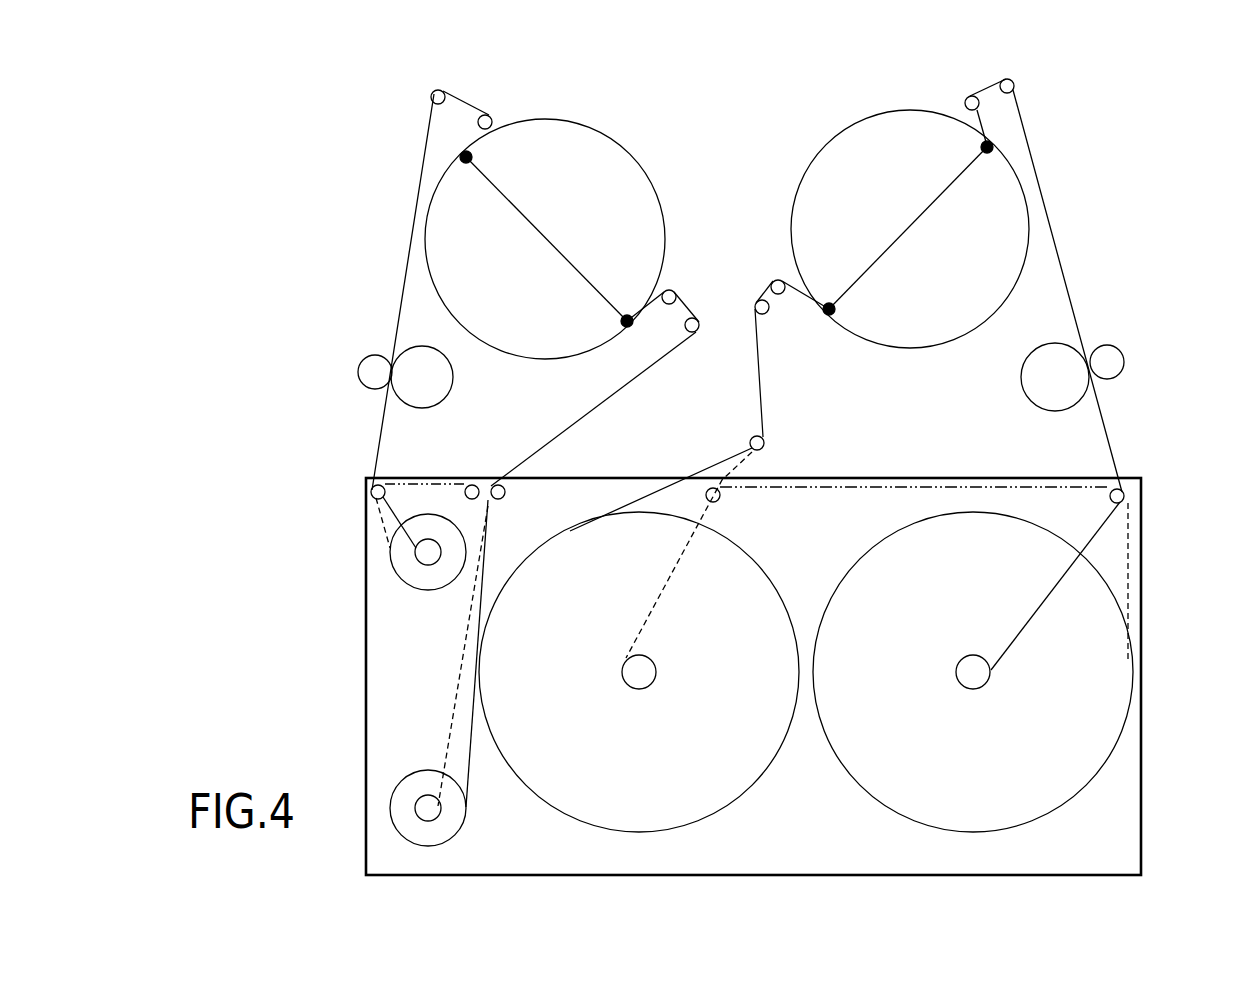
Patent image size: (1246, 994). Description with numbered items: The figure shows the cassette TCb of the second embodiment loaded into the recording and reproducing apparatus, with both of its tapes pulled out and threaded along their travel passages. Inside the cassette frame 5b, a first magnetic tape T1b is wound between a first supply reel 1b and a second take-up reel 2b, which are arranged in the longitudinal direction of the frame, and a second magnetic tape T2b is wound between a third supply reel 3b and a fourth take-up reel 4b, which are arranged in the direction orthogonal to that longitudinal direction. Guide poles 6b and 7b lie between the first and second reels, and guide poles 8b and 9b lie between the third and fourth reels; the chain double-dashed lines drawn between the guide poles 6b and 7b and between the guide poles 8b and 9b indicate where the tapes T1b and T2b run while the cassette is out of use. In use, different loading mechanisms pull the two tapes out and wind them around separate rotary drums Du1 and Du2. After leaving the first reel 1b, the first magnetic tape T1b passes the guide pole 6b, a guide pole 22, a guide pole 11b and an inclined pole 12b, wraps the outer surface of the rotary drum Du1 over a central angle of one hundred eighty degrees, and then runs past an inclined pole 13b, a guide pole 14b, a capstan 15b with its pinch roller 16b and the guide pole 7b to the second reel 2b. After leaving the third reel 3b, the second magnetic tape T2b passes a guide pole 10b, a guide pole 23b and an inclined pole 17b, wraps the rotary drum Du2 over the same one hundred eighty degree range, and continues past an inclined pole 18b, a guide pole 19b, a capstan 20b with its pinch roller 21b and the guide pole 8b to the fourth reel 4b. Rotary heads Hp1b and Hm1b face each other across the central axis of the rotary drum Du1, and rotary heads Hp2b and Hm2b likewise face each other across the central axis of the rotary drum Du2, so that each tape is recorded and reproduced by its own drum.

The first supply reel 1b is at (720, 788).
The second take-up reel 2b is at (898, 772).
The third supply reel 3b is at (418, 788).
The fourth take-up reel 4b is at (422, 580).
The cassette frame 5b is at (1141, 662).
The guide pole 6b is at (720, 498).
The guide pole 7b is at (1109, 497).
The guide pole 8b is at (371, 492).
The guide pole 9b is at (465, 492).
The guide pole 10b is at (504, 498).
The guide pole 11b is at (765, 315).
The inclined pole 12b is at (783, 295).
The inclined pole 13b is at (970, 96).
The guide pole 14b is at (1007, 79).
The capstan 15b is at (1124, 363).
The pinch roller 16b is at (1022, 382).
The inclined pole 17b is at (666, 305).
The inclined pole 18b is at (489, 115).
The guide pole 19b is at (441, 91).
The capstan 20b is at (365, 384).
The pinch roller 21b is at (453, 378).
The guide pole 22 is at (752, 439).
The guide pole 23b is at (698, 318).
The rotary drum Du1 is at (876, 344).
The rotary drum Du2 is at (626, 149).
The rotary head Hm1b is at (829, 302).
The rotary head Hp1b is at (987, 155).
The rotary head Hm2b is at (466, 163).
The rotary head Hp2b is at (627, 315).
The first magnetic tape T1b is at (1070, 273).
The second magnetic tape T2b is at (630, 384).
The cassette TCb is at (349, 690).